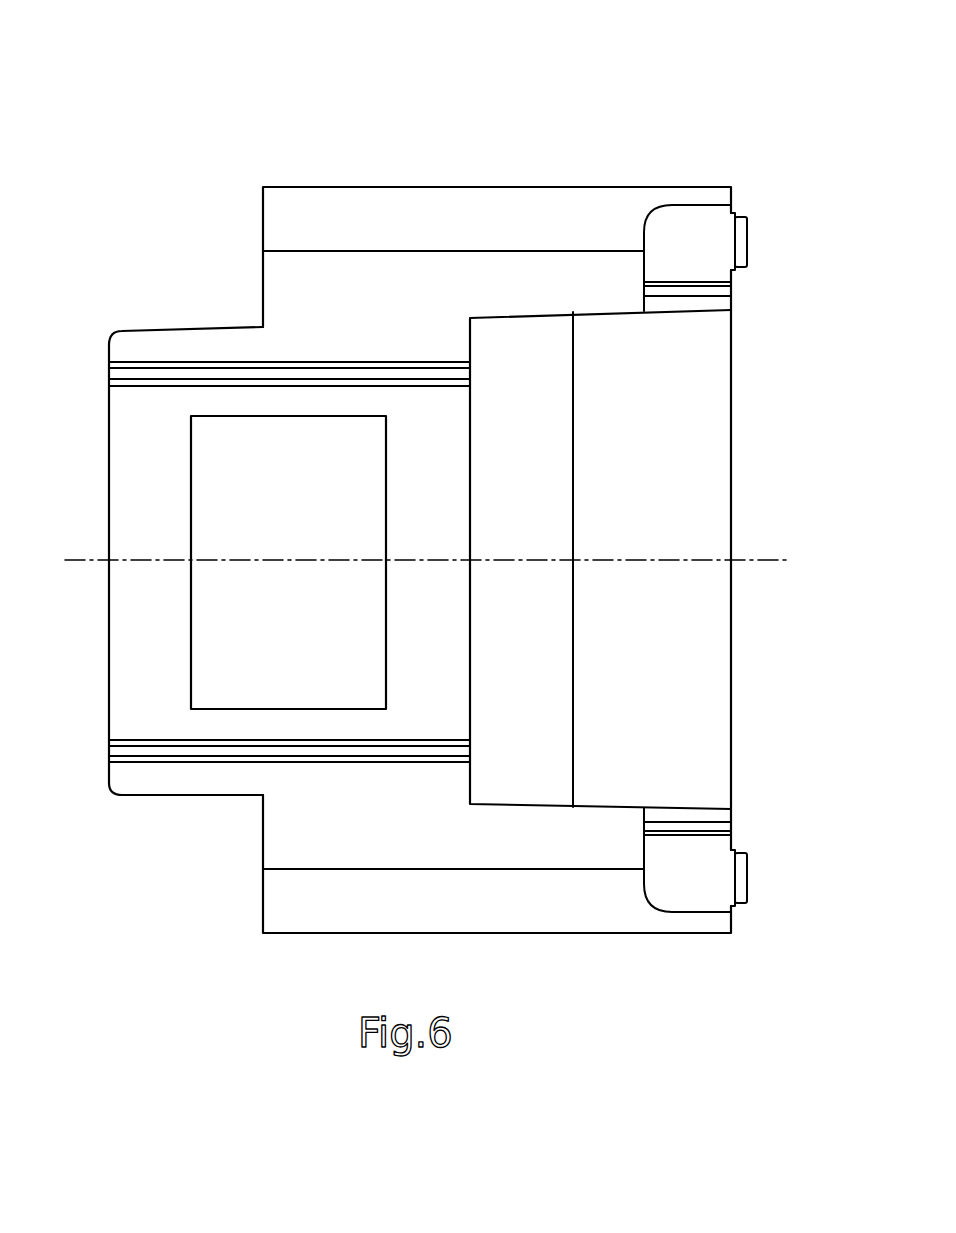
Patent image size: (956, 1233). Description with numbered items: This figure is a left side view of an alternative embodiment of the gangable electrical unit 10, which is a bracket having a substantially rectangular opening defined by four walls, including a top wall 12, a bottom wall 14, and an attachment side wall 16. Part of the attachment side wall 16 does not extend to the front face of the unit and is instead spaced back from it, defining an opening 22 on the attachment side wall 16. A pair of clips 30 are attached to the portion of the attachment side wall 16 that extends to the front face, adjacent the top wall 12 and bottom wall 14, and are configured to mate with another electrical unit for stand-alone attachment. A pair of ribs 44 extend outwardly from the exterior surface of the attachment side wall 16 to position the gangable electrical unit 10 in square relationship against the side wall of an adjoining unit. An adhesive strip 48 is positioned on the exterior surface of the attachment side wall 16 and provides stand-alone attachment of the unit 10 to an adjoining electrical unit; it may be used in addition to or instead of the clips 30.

The gangable electrical unit 10 is at (751, 147).
The top wall 12 is at (460, 186).
The bottom wall 14 is at (588, 933).
The attachment side wall 16 is at (436, 509).
The opening 22 is at (613, 315).
The clips 30 is at (713, 246).
The ribs 44 is at (170, 368).
The adhesive strip 48 is at (229, 661).